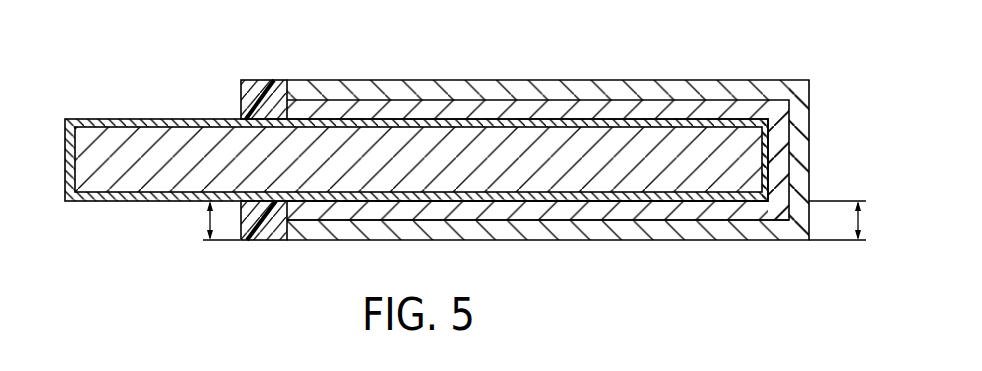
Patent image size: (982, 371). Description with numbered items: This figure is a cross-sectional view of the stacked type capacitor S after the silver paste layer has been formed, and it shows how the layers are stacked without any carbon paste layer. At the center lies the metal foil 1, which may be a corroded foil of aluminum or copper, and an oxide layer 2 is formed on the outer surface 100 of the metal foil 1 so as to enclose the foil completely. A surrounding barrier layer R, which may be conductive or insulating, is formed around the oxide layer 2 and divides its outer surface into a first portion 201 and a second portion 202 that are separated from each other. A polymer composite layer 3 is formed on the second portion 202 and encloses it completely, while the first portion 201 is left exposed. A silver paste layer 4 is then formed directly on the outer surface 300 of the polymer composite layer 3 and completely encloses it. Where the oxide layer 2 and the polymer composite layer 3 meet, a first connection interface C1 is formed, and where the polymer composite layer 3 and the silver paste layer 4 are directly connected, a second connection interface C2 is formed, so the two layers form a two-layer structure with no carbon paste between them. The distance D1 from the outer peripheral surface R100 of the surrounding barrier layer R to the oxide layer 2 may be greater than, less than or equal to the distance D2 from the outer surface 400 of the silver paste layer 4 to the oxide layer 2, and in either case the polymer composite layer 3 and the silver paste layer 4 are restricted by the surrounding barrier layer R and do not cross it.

The stacked type capacitor S is at (87, 30).
The metal foil 1 is at (750, 153).
The oxide layer 2 is at (770, 176).
The polymer composite layer 3 is at (787, 117).
The silver paste layer 4 is at (787, 77).
The outer surface of the metal foil 100 is at (684, 124).
The first portion 201 is at (146, 119).
The second portion 202 is at (430, 121).
The outer surface of the polymer composite layer 300 is at (563, 103).
The outer surface of the silver paste layer 400 is at (741, 80).
The surrounding barrier layer R is at (249, 78).
The outer peripheral surface of the surrounding barrier layer R100 is at (267, 79).
The first connection interface C1 is at (663, 203).
The second connection interface C2 is at (723, 223).
The distance from outer peripheral surface of barrier layer to oxide layer D1 is at (208, 220).
The distance from outer surface of silver paste layer to oxide layer D2 is at (837, 220).